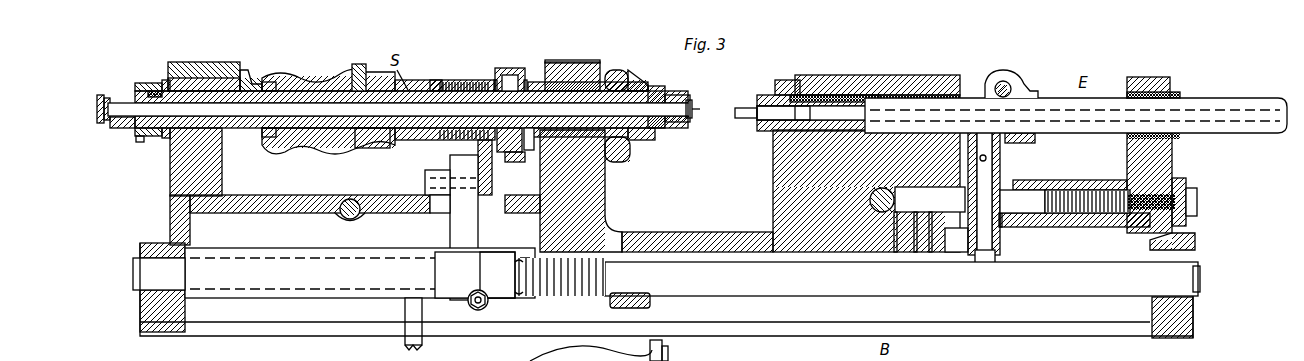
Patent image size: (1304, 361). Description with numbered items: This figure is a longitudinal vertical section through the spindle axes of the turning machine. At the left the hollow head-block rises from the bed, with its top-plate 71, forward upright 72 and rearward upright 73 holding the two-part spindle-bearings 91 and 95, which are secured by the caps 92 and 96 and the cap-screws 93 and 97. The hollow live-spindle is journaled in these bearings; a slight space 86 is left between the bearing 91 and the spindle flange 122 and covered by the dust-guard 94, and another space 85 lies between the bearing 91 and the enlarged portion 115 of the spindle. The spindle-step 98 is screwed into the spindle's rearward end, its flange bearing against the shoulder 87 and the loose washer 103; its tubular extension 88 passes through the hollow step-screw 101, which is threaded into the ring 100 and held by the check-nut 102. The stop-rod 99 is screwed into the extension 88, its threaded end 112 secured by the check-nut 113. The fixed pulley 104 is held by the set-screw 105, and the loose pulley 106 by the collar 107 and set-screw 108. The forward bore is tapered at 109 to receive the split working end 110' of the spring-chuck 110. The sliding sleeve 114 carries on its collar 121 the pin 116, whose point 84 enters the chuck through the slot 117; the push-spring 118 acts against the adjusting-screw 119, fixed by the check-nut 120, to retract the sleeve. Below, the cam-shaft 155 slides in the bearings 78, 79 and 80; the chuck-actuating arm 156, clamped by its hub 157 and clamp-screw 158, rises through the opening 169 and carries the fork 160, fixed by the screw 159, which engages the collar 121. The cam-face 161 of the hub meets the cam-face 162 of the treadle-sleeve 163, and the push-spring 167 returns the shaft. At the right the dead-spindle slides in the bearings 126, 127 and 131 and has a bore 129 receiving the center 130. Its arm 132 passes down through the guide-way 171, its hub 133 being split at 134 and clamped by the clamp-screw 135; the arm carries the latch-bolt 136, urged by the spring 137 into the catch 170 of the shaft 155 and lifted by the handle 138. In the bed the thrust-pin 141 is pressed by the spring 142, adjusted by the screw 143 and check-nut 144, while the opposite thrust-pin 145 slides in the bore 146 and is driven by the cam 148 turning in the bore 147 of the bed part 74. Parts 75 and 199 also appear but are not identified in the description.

The upper plate of head-block 71 is at (280, 200).
The forward upright 72 is at (590, 170).
The rearward upright 73 is at (182, 178).
The part of the bed 74 is at (775, 165).
The bracket 75 is at (1162, 157).
The bearing 78 is at (1195, 300).
The bearing 79 is at (150, 250).
The middle bearing 80 is at (650, 300).
The point of pin or screw 84 is at (510, 152).
The space 85 is at (528, 142).
The space 86 is at (640, 133).
The shoulder 87 is at (166, 80).
The tubular extension 88 is at (140, 142).
The forward spindle-bearing 91 is at (612, 72).
The cap 92 is at (560, 62).
The cap-screws 93 is at (575, 62).
The dust-guard 94 is at (626, 152).
The rearward spindle-bearing 95 is at (250, 72).
The cap 96 is at (225, 80).
The cap-screws 97 is at (200, 62).
The spindle-step 98 is at (150, 137).
The stop-rod 99 is at (308, 100).
The ring or nut 100 is at (168, 82).
The hollow step-screw 101 is at (125, 128).
The check-nut 102 is at (140, 84).
The loose washer 103 is at (156, 92).
The fixed pulley 104 is at (362, 150).
The set-screw 105 is at (358, 70).
The loose pulley 106 is at (296, 152).
The collar 107 is at (268, 135).
The set-screw 108 is at (268, 84).
The tapered bore 109 is at (656, 88).
The chuck 110 is at (685, 115).
The working end of chuck 110' is at (676, 100).
The threaded end of stop-rod 112 is at (108, 118).
The check-nut 113 is at (110, 96).
The sliding sleeve 114 is at (468, 80).
The enlarged portion of spindle 115 is at (514, 163).
The pin or screw 116 is at (510, 70).
The slot 117 is at (522, 80).
The spiral push-spring 118 is at (458, 82).
The adjusting-screw 119 is at (420, 140).
The check-nut 120 is at (432, 80).
The collar of sliding sleeve 121 is at (506, 78).
The flange of spindle 122 is at (625, 80).
The bearing 126 is at (798, 80).
The bearing 127 is at (940, 75).
The bore 129 is at (1220, 112).
The center 130 is at (755, 112).
The bearing 131 is at (1172, 88).
The arm 132 is at (1001, 162).
The hub 133 is at (1035, 140).
The split 134 is at (1020, 90).
The clamp-screw 135 is at (1006, 81).
The latch-bolt 136 is at (984, 262).
The spring 137 is at (947, 246).
The handle 138 is at (925, 206).
The thrust-pin 141 is at (1025, 200).
The spring 142 is at (1086, 213).
The screw 143 is at (1197, 210).
The check-nut 144 is at (1188, 192).
The thrust-pin 145 is at (930, 215).
The bore 146 is at (915, 252).
The bore 147 is at (888, 215).
The pin-actuating cam 148 is at (878, 214).
The cam-shaft 155 is at (140, 272).
The chuck-actuating arm 156 is at (478, 230).
The hub 157 is at (500, 268).
The clamp-screw 158 is at (476, 308).
The screw 159 is at (428, 180).
The fork 160 is at (478, 150).
The cam-face 161 is at (432, 262).
The cam-face 162 is at (445, 270).
The treadle-cam sleeve 163 is at (272, 255).
The spiral push-spring 167 is at (555, 296).
The opening 169 is at (438, 210).
The catch 170 is at (986, 268).
The guide-way 171 is at (1018, 228).
The ball 199 is at (348, 221).